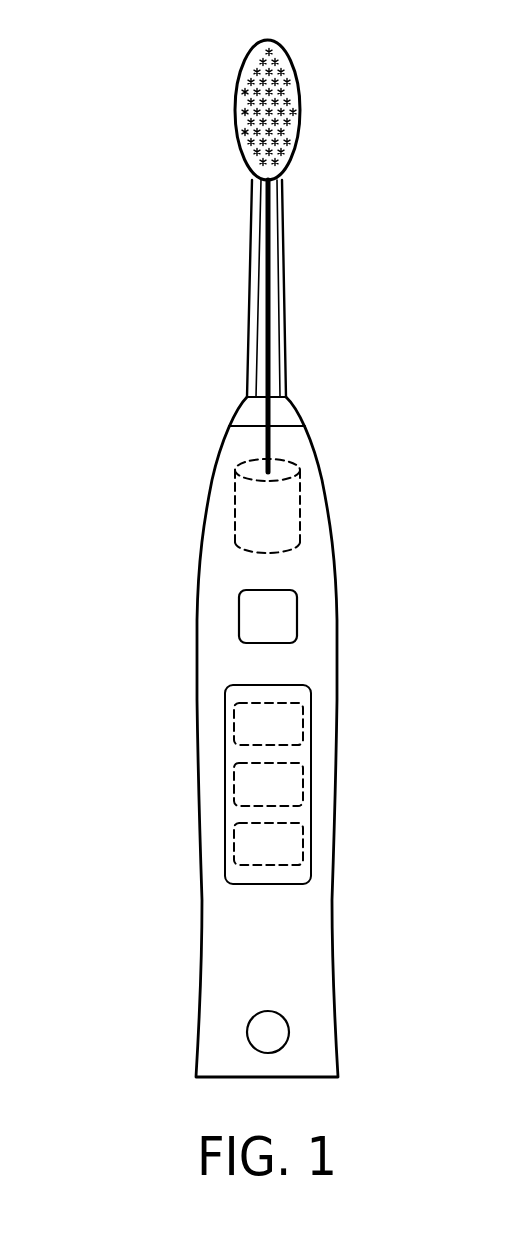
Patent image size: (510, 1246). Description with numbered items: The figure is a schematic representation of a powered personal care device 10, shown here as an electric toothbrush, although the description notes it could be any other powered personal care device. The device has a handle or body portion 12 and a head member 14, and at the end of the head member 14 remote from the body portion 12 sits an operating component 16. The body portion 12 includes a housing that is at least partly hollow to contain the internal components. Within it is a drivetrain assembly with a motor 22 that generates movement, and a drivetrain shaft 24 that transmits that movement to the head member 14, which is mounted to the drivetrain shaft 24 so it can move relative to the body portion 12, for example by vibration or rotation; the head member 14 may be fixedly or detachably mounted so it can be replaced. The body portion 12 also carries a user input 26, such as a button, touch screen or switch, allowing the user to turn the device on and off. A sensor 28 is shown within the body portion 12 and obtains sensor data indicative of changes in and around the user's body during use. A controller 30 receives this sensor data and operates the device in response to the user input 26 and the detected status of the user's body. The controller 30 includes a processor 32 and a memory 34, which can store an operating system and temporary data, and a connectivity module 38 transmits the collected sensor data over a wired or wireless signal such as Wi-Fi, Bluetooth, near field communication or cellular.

The personal care device 10 is at (115, 95).
The body portion 12 is at (190, 604).
The head member 14 is at (243, 268).
The operating component 16 is at (235, 110).
The motor 22 is at (287, 513).
The drivetrain shaft 24 is at (268, 337).
The user input 26 is at (255, 1032).
The sensor 28 is at (287, 618).
The controller 30 is at (232, 754).
The processor 32 is at (293, 723).
The memory 34 is at (293, 782).
The connectivity module 38 is at (293, 844).